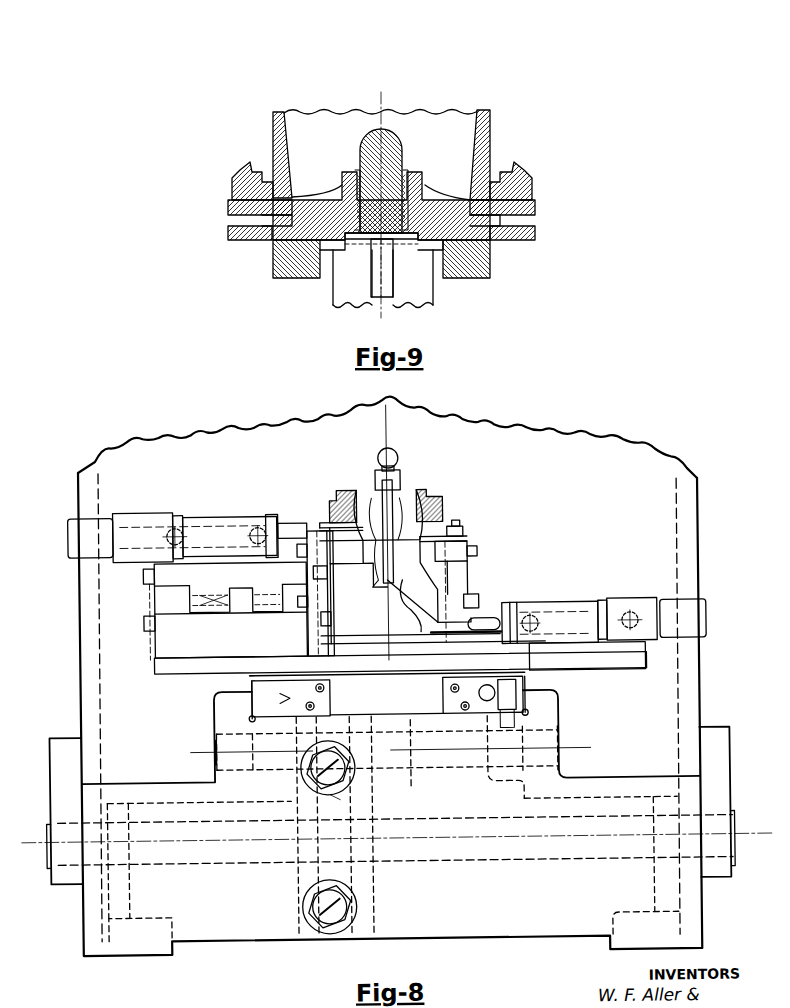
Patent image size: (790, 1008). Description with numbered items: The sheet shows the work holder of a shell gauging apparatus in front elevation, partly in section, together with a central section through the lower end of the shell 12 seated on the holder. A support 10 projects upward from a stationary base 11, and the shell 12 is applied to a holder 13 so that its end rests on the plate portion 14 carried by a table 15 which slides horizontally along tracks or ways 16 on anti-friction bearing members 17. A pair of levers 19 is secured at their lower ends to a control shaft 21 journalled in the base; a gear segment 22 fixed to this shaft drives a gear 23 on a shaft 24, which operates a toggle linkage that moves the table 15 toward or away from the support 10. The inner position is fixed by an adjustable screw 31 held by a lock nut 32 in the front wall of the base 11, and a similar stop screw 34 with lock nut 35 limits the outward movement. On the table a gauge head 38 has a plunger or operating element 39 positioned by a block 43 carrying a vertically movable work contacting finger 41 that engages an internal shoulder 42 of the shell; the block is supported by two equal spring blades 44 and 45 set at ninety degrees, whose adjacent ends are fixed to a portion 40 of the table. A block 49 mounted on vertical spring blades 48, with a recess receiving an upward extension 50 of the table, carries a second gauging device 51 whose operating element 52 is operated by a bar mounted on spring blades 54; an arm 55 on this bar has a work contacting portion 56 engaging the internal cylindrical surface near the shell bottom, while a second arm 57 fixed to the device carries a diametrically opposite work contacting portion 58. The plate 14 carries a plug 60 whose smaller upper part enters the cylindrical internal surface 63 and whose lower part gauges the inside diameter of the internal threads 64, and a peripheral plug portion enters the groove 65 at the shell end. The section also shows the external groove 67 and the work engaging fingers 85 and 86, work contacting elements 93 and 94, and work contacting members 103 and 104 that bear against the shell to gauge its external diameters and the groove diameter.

In FIG. 8, the support 10 is at (692, 494).
In FIG. 8, the base 11 is at (688, 929).
In FIG. 9, the shell 12 is at (489, 117).
In FIG. 8, the holder 13 is at (320, 646).
In FIG. 9, the plate portion 14 is at (488, 268).
In FIG. 8, the plate portion 14 is at (435, 494).
In FIG. 8, the table 15 is at (162, 669).
In FIG. 8, the tracks or ways 16 is at (219, 715).
In FIG. 8, the anti-friction bearing members 17 is at (282, 690).
In FIG. 8, the levers 19 is at (57, 759).
In FIG. 8, the control shaft 21 is at (170, 857).
In FIG. 8, the gear segment 22 is at (334, 852).
In FIG. 8, the gear 23 is at (390, 836).
In FIG. 8, the shaft 24 is at (277, 760).
In FIG. 8, the adjustable screw 31 is at (319, 917).
In FIG. 8, the lock nut 32 is at (325, 921).
In FIG. 8, the stop screw 34 is at (313, 769).
In FIG. 8, the lock nut 35 is at (322, 789).
In FIG. 8, the gauge head 38 is at (687, 609).
In FIG. 8, the plunger or operating element 39 is at (493, 622).
In FIG. 8, the portion of the table 40 is at (456, 556).
In FIG. 9, the work contacting finger 41 is at (390, 228).
In FIG. 8, the work contacting finger 41 is at (386, 494).
In FIG. 9, the internal shoulder 42 is at (436, 200).
In FIG. 8, the block 43 is at (437, 622).
In FIG. 8, the spring blade 44 is at (434, 538).
In FIG. 8, the spring blade 45 is at (472, 585).
In FIG. 8, the spring blades 48 is at (151, 598).
In FIG. 8, the block 49 is at (213, 582).
In FIG. 8, the upward extension of the table 50 is at (239, 596).
In FIG. 8, the gauging device 51 is at (139, 511).
In FIG. 8, the operating element or plunger 52 is at (312, 530).
In FIG. 8, the spring blades 54 is at (302, 570).
In FIG. 9, the arm 55 is at (418, 282).
In FIG. 8, the arm 55 is at (404, 505).
In FIG. 9, the work contacting portion 56 is at (432, 246).
In FIG. 9, the second arm 57 is at (340, 272).
In FIG. 8, the second arm 57 is at (369, 505).
In FIG. 9, the work contacting portion 58 is at (305, 268).
In FIG. 9, the plug 60 is at (381, 215).
In FIG. 8, the plug 60 is at (391, 452).
In FIG. 9, the cylindrical internal surface 63 is at (356, 146).
In FIG. 9, the internal threads 64 is at (342, 186).
In FIG. 9, the groove 65 is at (500, 250).
In FIG. 9, the groove 67 is at (230, 210).
In FIG. 9, the work engaging finger 85 is at (245, 182).
In FIG. 9, the work engaging finger 86 is at (522, 172).
In FIG. 9, the work contacting element 93 is at (236, 247).
In FIG. 9, the work contacting element 94 is at (526, 238).
In FIG. 9, the work contacting member 103 is at (236, 222).
In FIG. 9, the work contacting member 104 is at (524, 217).